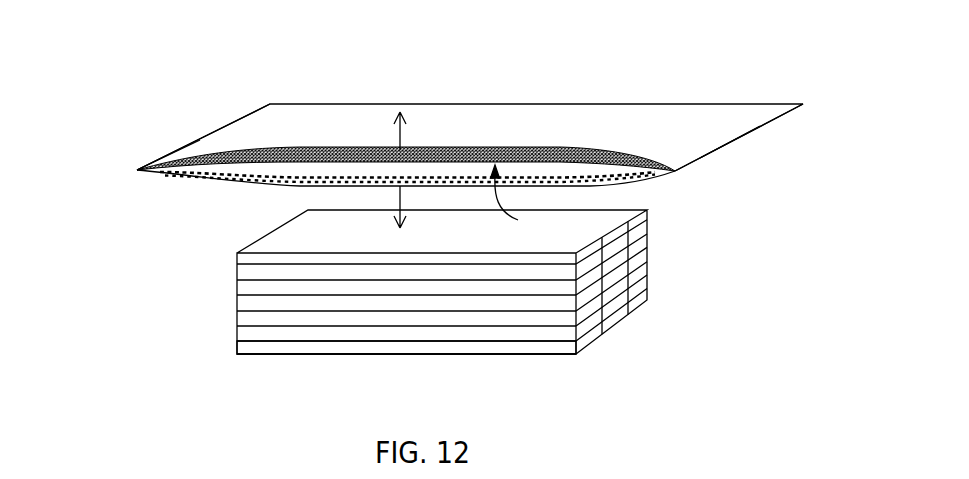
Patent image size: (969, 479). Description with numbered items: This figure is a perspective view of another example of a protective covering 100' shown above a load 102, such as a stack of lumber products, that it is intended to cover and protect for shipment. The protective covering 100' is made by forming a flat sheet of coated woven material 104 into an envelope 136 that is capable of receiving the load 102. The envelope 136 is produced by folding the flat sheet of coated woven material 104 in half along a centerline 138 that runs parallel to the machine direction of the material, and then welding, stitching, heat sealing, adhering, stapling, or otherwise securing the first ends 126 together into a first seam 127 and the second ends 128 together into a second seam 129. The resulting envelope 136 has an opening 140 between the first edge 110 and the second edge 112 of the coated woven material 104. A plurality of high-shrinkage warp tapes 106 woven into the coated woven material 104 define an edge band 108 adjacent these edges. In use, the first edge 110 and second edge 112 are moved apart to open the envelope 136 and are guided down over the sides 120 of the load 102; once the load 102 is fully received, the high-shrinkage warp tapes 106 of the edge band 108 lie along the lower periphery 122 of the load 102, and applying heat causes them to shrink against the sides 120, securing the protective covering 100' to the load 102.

The protective covering 100' is at (108, 30).
The load 102 is at (581, 372).
The coated woven material 104 is at (677, 128).
The high-shrinkage warp tapes 106 is at (362, 148).
The edge band 108 is at (566, 152).
The first edge 110 is at (627, 174).
The second edge 112 is at (290, 187).
The sides of the load 120 is at (310, 345).
The lower periphery of the load 122 is at (488, 355).
The first ends 126 is at (205, 135).
The first seam 127 is at (176, 153).
The second ends 128 is at (742, 137).
The second seam 129 is at (718, 150).
The envelope 136 is at (450, 168).
The centerline 138 is at (375, 106).
The opening 140 is at (526, 202).